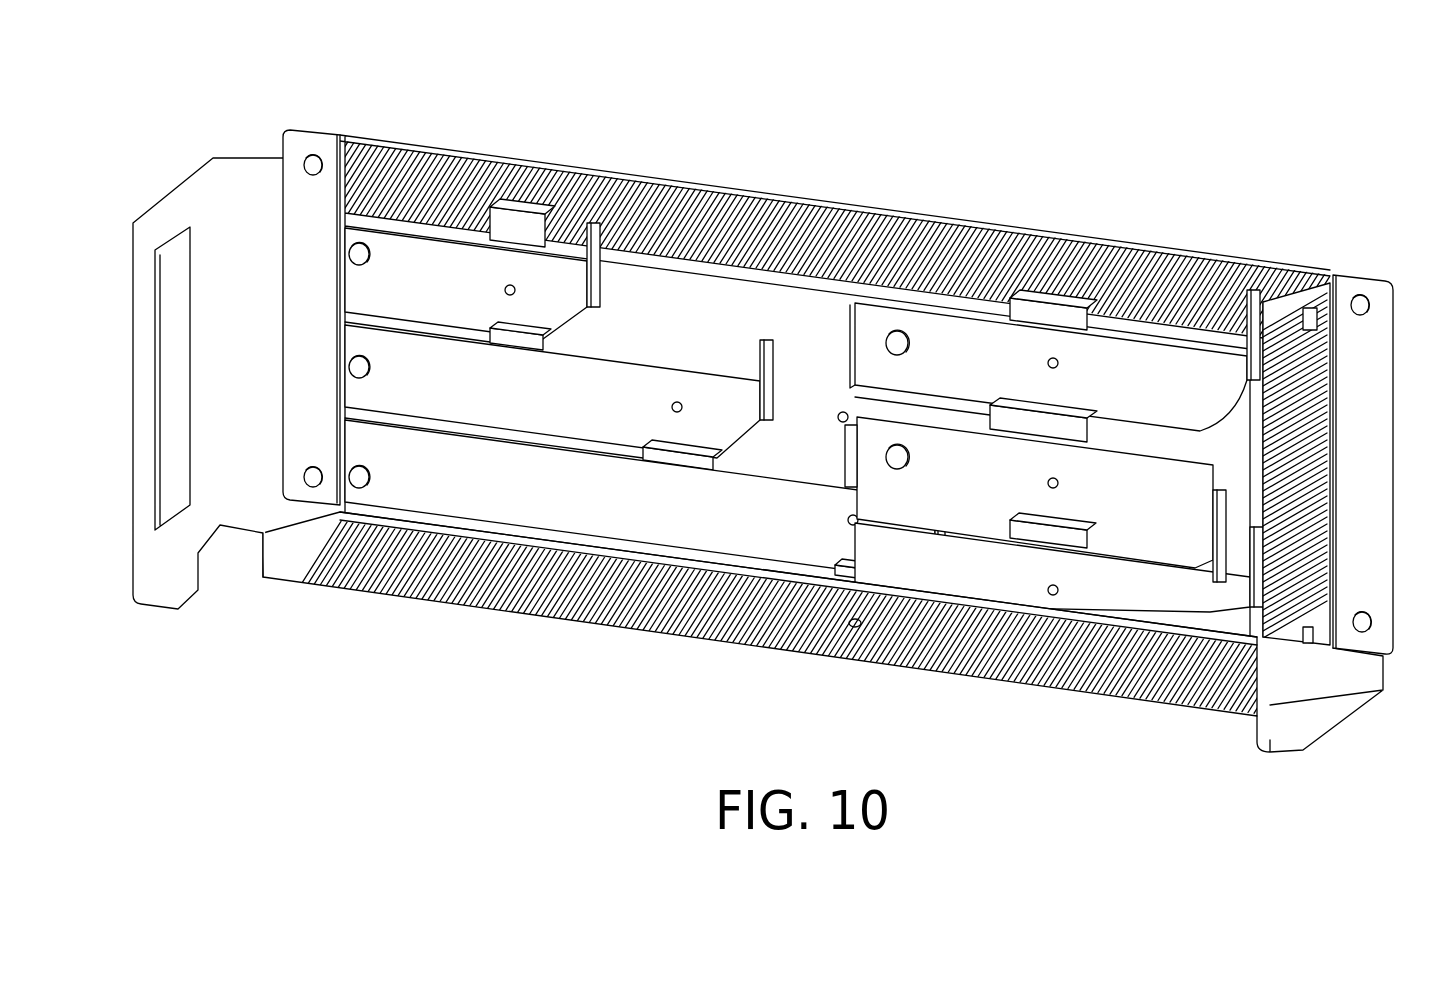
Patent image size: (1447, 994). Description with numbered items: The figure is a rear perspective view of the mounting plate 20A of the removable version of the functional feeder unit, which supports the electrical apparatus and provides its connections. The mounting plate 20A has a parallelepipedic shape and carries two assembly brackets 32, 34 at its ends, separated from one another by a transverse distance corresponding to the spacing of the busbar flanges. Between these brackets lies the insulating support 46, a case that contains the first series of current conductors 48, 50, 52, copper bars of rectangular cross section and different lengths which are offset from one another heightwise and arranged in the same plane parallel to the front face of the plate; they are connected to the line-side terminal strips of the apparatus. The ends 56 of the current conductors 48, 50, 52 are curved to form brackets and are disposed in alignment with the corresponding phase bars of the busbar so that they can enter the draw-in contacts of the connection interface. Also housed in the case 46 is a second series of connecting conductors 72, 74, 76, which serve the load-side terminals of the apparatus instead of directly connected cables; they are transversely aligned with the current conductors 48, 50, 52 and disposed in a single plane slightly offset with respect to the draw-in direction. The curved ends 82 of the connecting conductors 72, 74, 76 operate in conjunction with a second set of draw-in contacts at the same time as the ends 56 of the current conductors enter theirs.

The mounting plate 20A is at (782, 170).
The assembly bracket 32 is at (302, 145).
The assembly bracket 34 is at (1377, 340).
The insulating support 46 is at (1160, 265).
The current conductor 48 is at (405, 270).
The current conductor 50 is at (400, 590).
The current conductor 52 is at (460, 392).
The ends of the current conductors 56 is at (765, 375).
The connecting conductor 72 is at (953, 348).
The connecting conductor 74 is at (1077, 478).
The connecting conductor 76 is at (1107, 587).
The curved ends 82 is at (1213, 573).